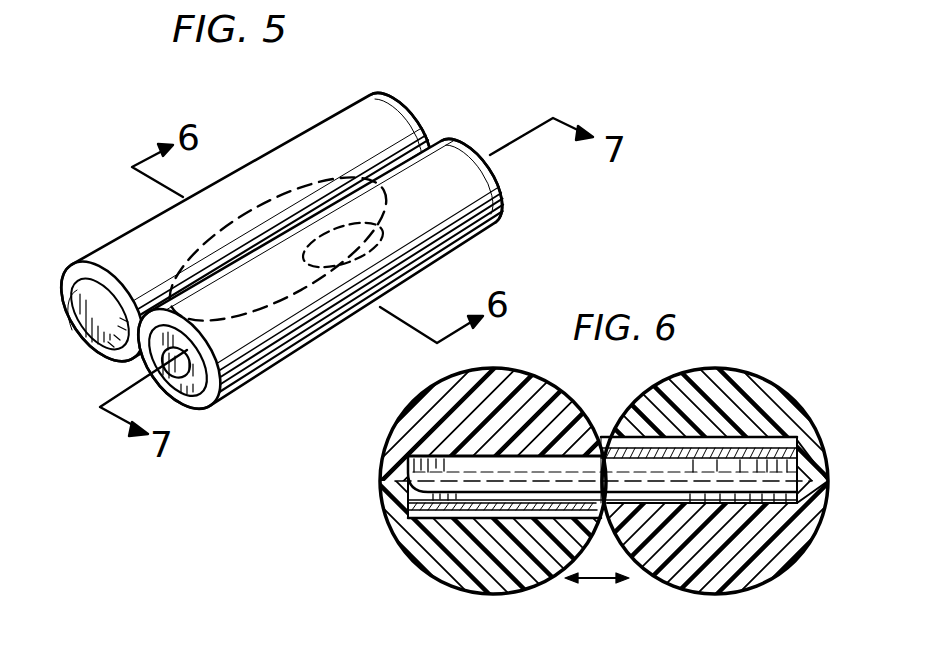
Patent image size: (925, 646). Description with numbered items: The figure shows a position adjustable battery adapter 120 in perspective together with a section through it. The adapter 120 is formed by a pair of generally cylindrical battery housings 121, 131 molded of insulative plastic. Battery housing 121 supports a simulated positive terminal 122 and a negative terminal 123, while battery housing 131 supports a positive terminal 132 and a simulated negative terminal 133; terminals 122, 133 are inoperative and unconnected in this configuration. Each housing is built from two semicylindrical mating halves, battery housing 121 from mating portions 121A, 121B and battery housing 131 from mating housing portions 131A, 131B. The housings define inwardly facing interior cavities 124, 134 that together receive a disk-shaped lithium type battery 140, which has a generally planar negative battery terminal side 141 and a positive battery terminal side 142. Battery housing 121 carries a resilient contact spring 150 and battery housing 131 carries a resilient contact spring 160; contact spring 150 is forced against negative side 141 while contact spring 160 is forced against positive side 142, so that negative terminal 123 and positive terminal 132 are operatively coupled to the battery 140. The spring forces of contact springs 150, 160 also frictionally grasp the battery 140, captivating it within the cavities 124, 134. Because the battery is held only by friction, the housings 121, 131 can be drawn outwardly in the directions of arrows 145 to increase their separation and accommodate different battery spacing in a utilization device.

In FIG. 5, the position adjustable battery adapter 120 is at (341, 262).
In FIG. 6, the position adjustable battery adapter 120 is at (490, 412).
In FIG. 5, the battery housing 121 is at (322, 126).
In FIG. 6, the battery housing 121 is at (781, 575).
In FIG. 6, the semicylindrical mating portion 121A is at (807, 447).
In FIG. 6, the semicylindrical mating portion 121B is at (797, 543).
In FIG. 5, the simulated positive terminal 122 is at (411, 120).
In FIG. 5, the negative terminal 123 is at (84, 330).
In FIG. 6, the interior cavity 124 is at (820, 517).
In FIG. 5, the battery housing 131 is at (263, 335).
In FIG. 6, the battery housing 131 is at (401, 547).
In FIG. 6, the semicylindrical mating housing portion 131A is at (413, 402).
In FIG. 6, the semicylindrical mating housing portion 131B is at (453, 568).
In FIG. 5, the positive terminal 132 is at (186, 390).
In FIG. 5, the simulated negative terminal 133 is at (493, 177).
In FIG. 6, the interior cavity 134 is at (530, 518).
In FIG. 5, the disk-shaped lithium type battery 140 is at (403, 283).
In FIG. 6, the disk-shaped lithium type battery 140 is at (583, 467).
In FIG. 6, the negative battery terminal side 141 is at (601, 505).
In FIG. 6, the positive battery terminal side 142 is at (555, 452).
In FIG. 6, the arrows 145 is at (598, 581).
In FIG. 6, the resilient contact spring 150 is at (740, 447).
In FIG. 6, the resilient contact spring 160 is at (405, 482).